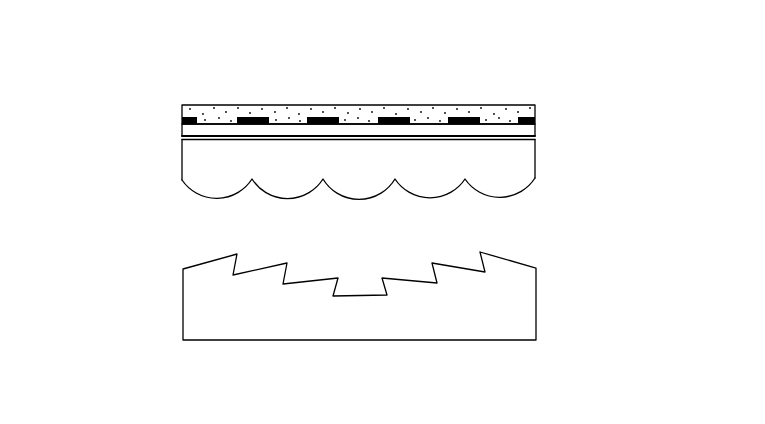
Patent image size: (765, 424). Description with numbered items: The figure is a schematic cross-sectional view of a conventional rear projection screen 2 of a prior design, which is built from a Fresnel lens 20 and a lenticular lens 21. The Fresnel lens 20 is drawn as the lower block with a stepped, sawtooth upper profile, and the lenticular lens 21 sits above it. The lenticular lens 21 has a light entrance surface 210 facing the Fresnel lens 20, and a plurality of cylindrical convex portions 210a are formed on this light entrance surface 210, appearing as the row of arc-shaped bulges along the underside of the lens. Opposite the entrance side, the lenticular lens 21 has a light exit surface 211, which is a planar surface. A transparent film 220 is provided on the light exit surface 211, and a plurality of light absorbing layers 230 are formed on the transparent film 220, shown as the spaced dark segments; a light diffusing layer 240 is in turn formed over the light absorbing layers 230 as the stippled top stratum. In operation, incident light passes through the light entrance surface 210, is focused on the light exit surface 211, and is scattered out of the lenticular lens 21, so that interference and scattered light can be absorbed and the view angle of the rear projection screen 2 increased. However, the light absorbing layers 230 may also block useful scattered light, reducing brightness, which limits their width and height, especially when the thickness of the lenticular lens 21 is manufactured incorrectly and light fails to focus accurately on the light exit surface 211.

The rear projection screen 2 is at (160, 28).
The Fresnel lens 20 is at (183, 312).
The lenticular lens 21 is at (181, 147).
The light entrance surface 210 is at (194, 194).
The cylindrical convex portions 210a is at (500, 187).
The light exit surface 211 is at (204, 138).
The transparent film 220 is at (530, 132).
The light absorbing layers 230 is at (320, 117).
The light diffusing layer 240 is at (427, 107).